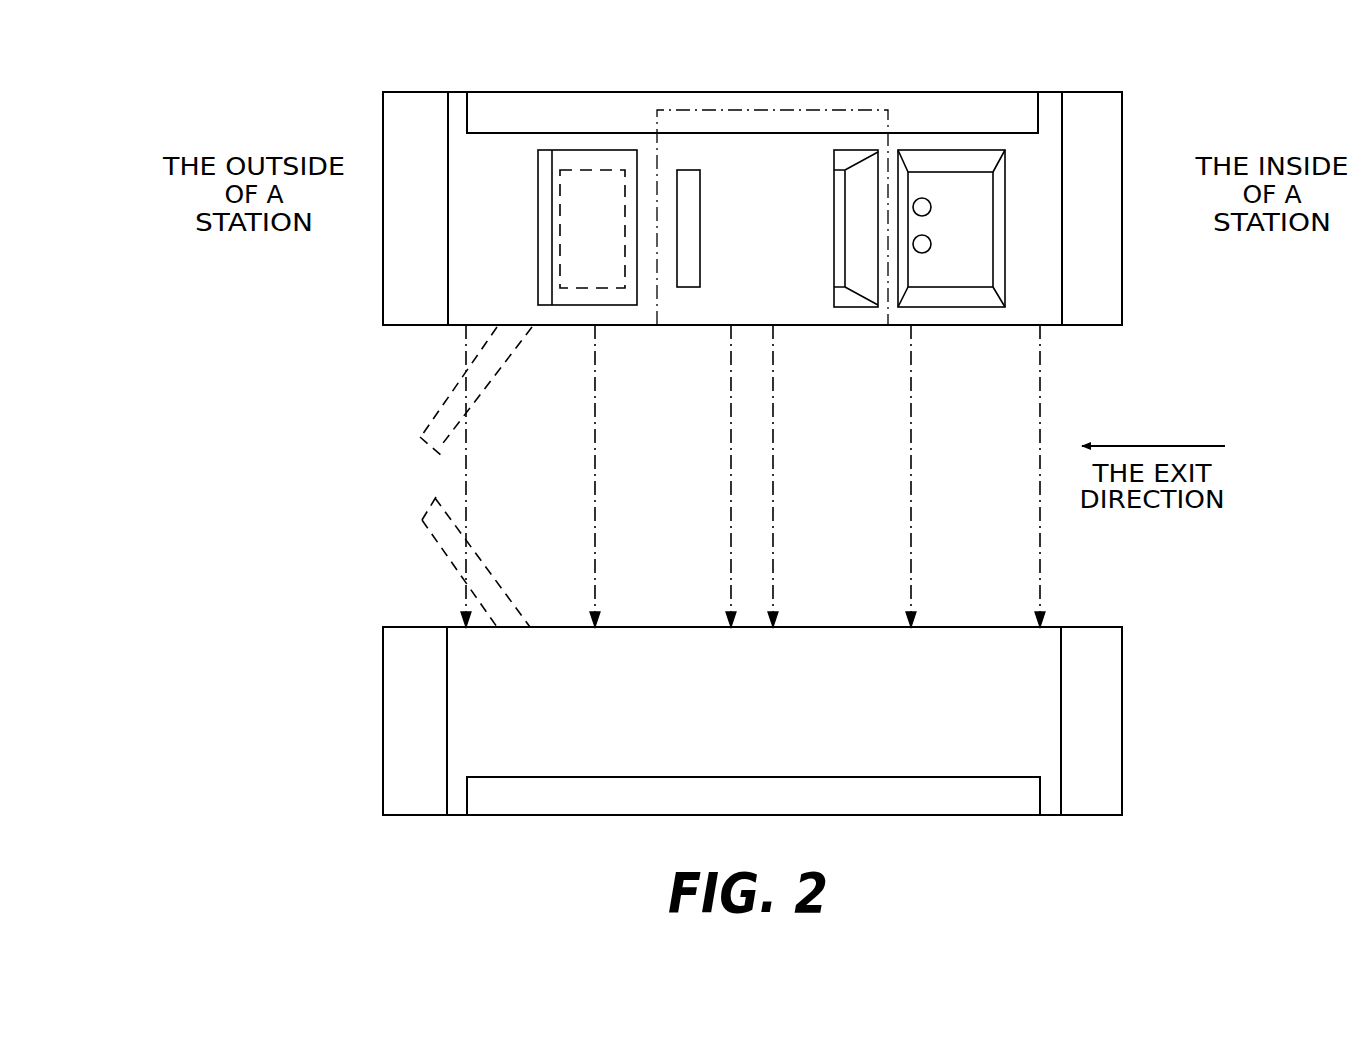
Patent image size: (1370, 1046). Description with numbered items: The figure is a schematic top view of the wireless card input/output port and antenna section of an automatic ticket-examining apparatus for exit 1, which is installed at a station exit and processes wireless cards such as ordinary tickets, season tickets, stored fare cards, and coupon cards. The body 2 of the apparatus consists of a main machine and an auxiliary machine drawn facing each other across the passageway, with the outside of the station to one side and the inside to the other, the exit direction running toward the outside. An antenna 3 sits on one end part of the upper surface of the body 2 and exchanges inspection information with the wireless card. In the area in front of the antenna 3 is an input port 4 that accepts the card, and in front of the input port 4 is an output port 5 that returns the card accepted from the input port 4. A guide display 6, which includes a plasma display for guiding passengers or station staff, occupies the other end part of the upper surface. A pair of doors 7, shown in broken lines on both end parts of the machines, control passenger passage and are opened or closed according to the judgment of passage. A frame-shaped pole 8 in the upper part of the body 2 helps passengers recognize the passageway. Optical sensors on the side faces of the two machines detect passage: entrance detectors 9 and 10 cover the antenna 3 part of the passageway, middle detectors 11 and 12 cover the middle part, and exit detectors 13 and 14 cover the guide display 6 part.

The automatic ticket-examining apparatus for exit 1 is at (1049, 86).
The body 2 is at (954, 100).
The antenna 3 is at (978, 185).
The input port 4 is at (858, 169).
The output port 5 is at (688, 176).
The guide display 6 is at (610, 160).
The doors 7 is at (418, 437).
The frame-shaped pole 8 is at (487, 101).
The entrance detector 9 is at (1046, 328).
The entrance detector 10 is at (916, 328).
The middle detector 11 is at (778, 328).
The middle detector 12 is at (735, 330).
The exit detector 13 is at (600, 328).
The exit detector 14 is at (461, 330).